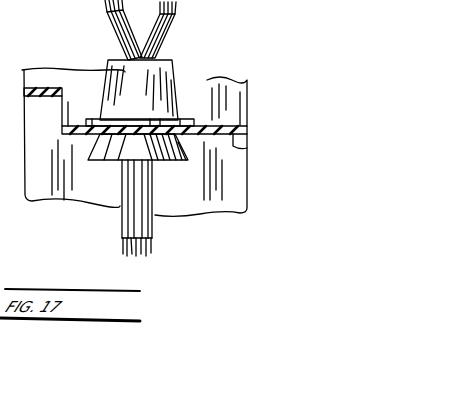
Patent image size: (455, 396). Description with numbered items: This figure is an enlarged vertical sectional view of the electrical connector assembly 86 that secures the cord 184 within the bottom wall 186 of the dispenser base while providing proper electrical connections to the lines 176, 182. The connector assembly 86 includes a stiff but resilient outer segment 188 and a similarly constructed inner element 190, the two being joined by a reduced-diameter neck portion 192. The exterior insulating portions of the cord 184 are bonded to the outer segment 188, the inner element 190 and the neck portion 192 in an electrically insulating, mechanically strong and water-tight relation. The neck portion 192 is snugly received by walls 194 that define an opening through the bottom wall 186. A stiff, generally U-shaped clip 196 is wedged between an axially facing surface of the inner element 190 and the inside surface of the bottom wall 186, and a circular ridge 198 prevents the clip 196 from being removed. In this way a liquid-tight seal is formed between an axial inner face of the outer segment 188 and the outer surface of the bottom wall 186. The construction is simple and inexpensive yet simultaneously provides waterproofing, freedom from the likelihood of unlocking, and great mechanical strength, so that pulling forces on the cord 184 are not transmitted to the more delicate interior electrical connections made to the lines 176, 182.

The electrical connector assembly 86 is at (206, 74).
The line 176 is at (112, 24).
The line 182 is at (162, 28).
The cord 184 is at (152, 238).
The bottom wall 186 is at (250, 146).
The outer segment 188 is at (160, 158).
The inner element 190 is at (128, 82).
The neck portion 192 is at (198, 140).
The walls 194 is at (73, 137).
The U-shaped clip 196 is at (190, 128).
The circular ridge 198 is at (78, 120).